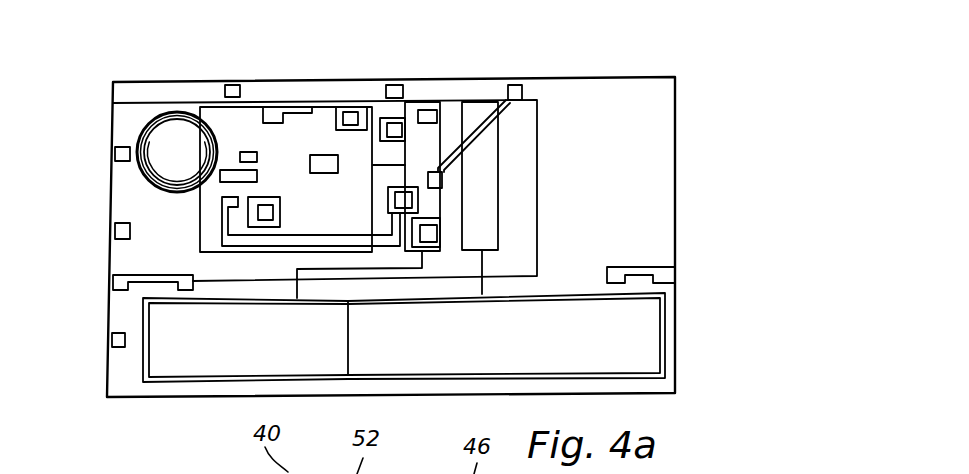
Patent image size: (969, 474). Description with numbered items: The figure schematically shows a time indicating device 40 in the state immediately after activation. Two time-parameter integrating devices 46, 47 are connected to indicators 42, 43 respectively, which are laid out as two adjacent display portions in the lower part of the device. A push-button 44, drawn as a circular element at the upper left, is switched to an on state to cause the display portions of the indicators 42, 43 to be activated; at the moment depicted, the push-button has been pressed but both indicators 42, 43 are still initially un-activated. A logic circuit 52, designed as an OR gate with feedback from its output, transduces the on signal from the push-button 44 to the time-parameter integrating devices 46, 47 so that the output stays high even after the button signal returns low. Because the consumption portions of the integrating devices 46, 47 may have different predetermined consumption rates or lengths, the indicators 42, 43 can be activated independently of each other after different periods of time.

The indicating device 40 is at (297, 63).
The indicator 42 is at (262, 355).
The second indicator 43 is at (413, 355).
The push-button 44 is at (174, 151).
The time-parameter integrating device 46 is at (422, 145).
The time-parameter integrating device 47 is at (488, 152).
The logic circuit 52 is at (313, 143).